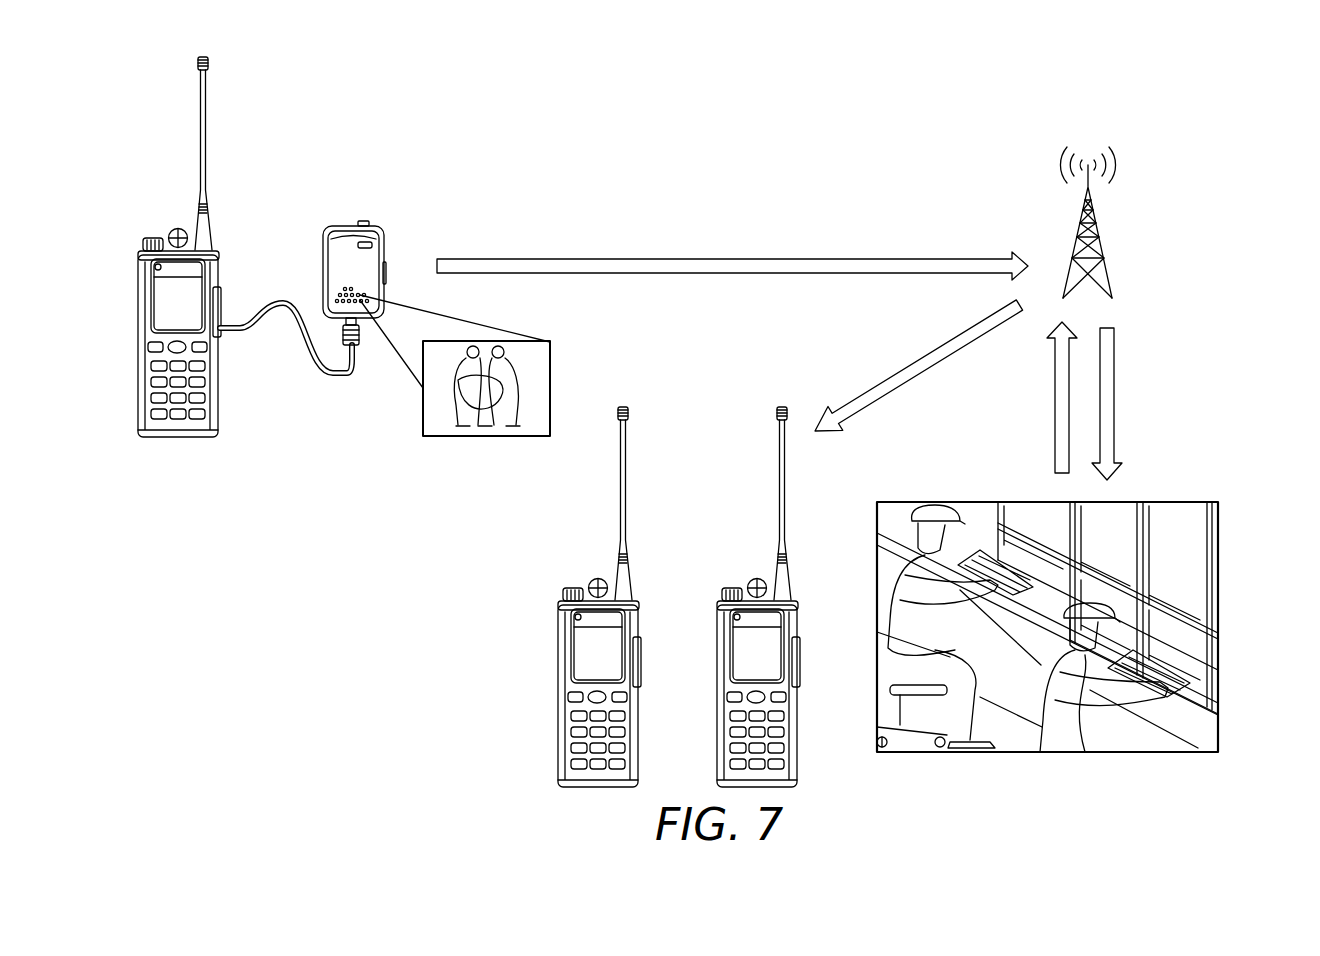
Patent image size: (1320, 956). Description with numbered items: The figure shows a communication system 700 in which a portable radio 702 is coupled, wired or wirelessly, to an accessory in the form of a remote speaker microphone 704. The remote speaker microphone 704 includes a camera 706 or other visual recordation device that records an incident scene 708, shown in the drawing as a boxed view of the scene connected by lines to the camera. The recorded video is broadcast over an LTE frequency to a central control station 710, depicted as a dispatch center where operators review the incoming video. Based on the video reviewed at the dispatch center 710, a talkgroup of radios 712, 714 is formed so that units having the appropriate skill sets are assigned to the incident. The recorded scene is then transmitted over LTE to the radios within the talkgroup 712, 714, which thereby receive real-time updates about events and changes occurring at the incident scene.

The communication system 700 is at (1296, 783).
The portable radio 702 is at (218, 396).
The remote speaker microphone 704 is at (323, 247).
The camera 706 is at (372, 245).
The incident scene 708 is at (550, 388).
The central control station 710 is at (1218, 502).
The talkgroup radio 712 is at (558, 665).
The talkgroup radio 714 is at (717, 665).